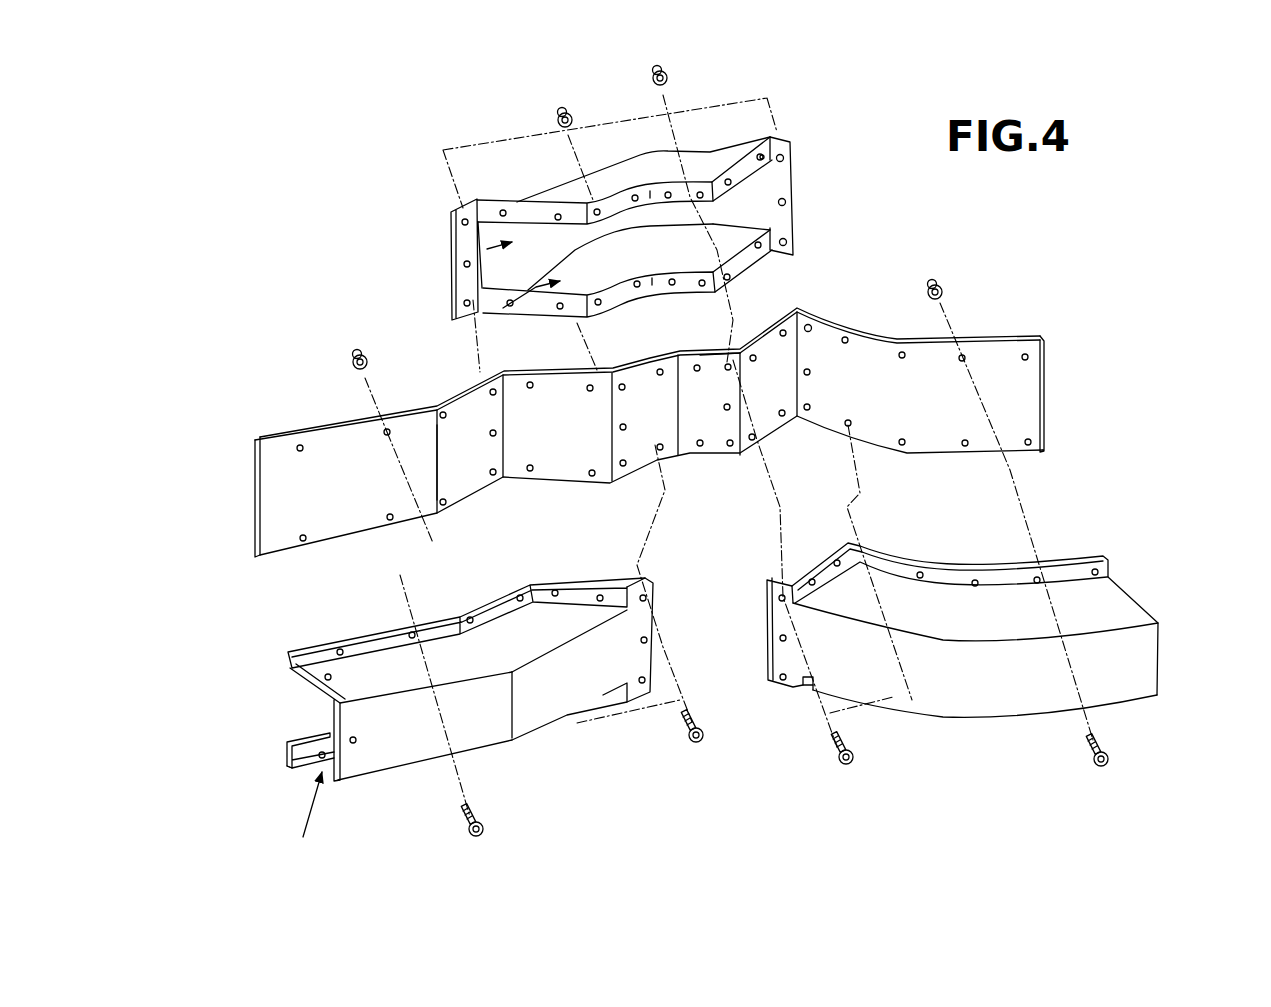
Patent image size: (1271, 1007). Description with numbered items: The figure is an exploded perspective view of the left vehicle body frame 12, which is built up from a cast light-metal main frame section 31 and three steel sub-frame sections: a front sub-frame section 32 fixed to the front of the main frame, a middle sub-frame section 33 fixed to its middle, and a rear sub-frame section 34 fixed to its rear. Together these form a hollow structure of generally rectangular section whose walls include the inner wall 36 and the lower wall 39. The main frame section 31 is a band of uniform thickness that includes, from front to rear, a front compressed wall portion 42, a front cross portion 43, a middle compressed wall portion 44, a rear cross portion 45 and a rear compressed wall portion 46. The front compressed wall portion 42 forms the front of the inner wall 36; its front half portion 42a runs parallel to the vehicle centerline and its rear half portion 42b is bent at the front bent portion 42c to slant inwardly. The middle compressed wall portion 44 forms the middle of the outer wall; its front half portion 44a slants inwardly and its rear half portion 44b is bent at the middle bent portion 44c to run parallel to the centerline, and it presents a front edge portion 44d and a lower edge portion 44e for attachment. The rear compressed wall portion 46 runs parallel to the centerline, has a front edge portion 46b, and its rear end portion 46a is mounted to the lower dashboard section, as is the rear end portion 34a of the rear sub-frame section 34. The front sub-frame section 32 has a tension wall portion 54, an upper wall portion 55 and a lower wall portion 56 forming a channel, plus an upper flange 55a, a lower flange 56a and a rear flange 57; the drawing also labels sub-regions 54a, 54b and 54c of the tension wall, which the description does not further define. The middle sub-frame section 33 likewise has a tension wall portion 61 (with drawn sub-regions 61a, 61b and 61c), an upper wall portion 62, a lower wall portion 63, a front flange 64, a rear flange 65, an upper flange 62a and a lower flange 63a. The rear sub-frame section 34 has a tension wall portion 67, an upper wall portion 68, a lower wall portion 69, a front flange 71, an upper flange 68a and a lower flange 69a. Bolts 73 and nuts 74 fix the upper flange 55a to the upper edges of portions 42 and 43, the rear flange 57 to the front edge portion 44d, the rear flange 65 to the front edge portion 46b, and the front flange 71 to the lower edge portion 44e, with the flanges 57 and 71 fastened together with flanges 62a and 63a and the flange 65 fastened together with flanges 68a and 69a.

The vehicle body frame 12 is at (290, 162).
The main frame section 31 is at (252, 491).
The front sub-frame section 32 is at (383, 775).
The middle sub-frame section 33 is at (528, 188).
The rear sub-frame section 34 is at (1012, 728).
The rear end portion 34a is at (1153, 650).
The inner wall 36 is at (462, 246).
The lower wall 39 is at (503, 308).
The front compressed wall portion 42 is at (335, 586).
The front half portion 42a is at (357, 520).
The rear half portion 42b is at (470, 495).
The front bent portion 42c is at (433, 468).
The front cross portion 43 is at (563, 467).
The middle compressed wall portion 44 is at (750, 543).
The front half portion 44a is at (656, 473).
The rear half portion 44b is at (740, 450).
The middle bent portion 44c is at (680, 440).
The front edge portion 44d is at (617, 453).
The lower edge portion 44e is at (727, 388).
The rear cross portion 45 is at (770, 407).
The rear compressed wall portion 46 is at (940, 360).
The rear end portion 46a is at (1033, 398).
The front edge portion 46b is at (807, 358).
The tension wall portion 54 is at (645, 765).
The web first portion 54a is at (480, 743).
The web second portion 54b is at (583, 703).
The web bend line 54c is at (513, 697).
The upper wall portion 55 is at (338, 676).
The upper flange 55a is at (487, 613).
The lower wall portion 56 is at (317, 743).
The lower flange 56a is at (297, 760).
The rear flange 57 is at (653, 643).
The tension wall portion 61 is at (612, 326).
The rail straight portion 61a is at (689, 233).
The rail angled portion 61b is at (716, 277).
The rail flange 61c is at (648, 215).
The upper wall portion 62 is at (713, 153).
The upper flange 62a is at (637, 152).
The lower wall portion 63 is at (785, 217).
The lower flange 63a is at (795, 278).
The front flange 64 is at (457, 288).
The rear flange 65 is at (793, 167).
The tension wall portion 67 is at (958, 710).
The upper wall portion 68 is at (1103, 598).
The upper flange 68a is at (940, 580).
The lower wall portion 69 is at (1117, 707).
The lower flange 69a is at (803, 690).
The front flange 71 is at (780, 663).
The bolts 73 is at (485, 836).
The nuts 74 is at (560, 107).